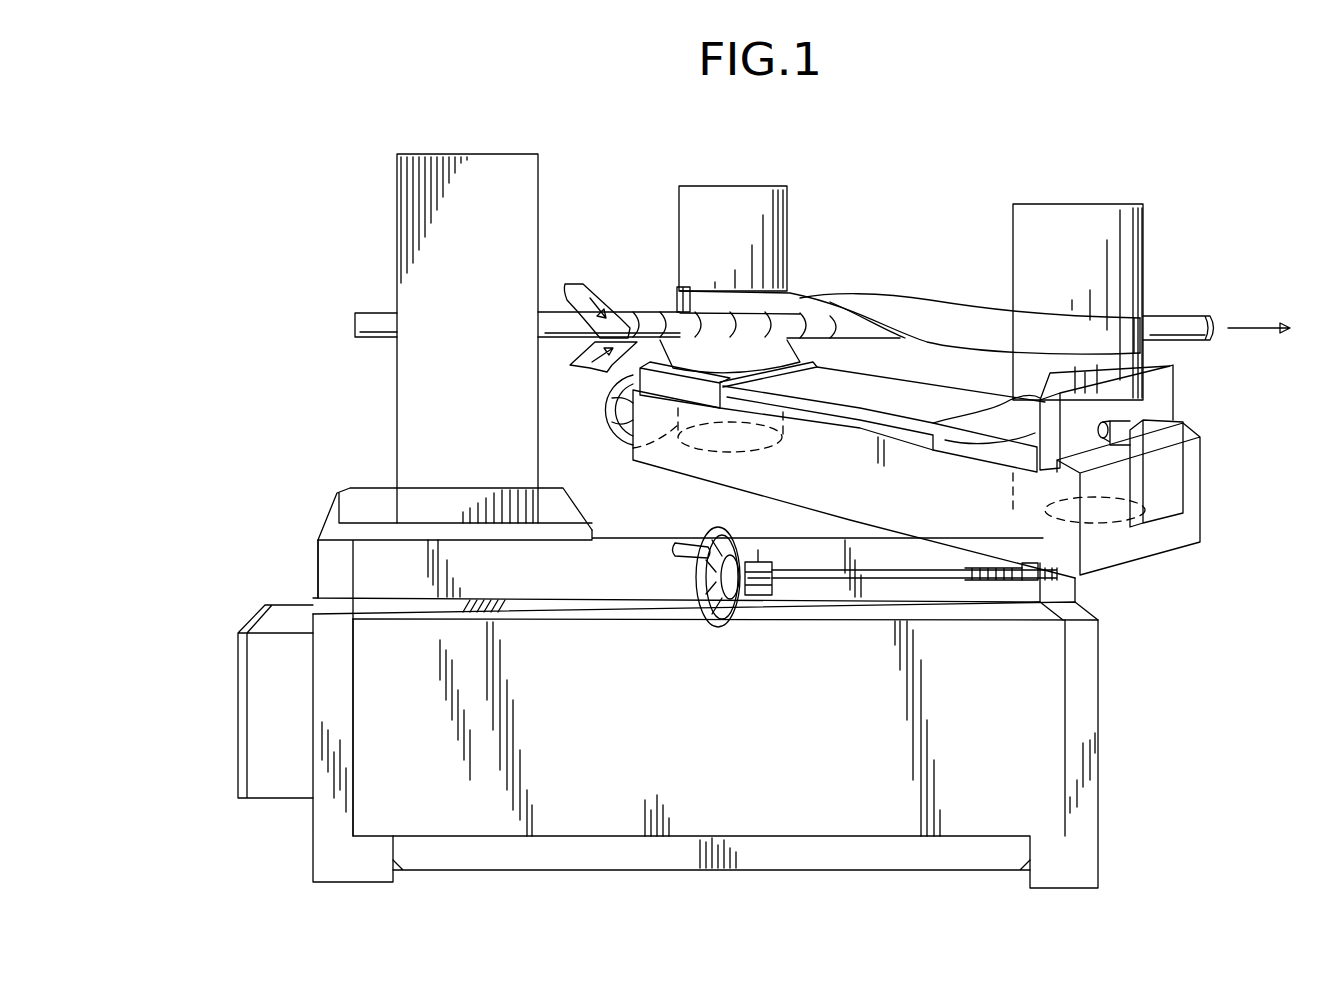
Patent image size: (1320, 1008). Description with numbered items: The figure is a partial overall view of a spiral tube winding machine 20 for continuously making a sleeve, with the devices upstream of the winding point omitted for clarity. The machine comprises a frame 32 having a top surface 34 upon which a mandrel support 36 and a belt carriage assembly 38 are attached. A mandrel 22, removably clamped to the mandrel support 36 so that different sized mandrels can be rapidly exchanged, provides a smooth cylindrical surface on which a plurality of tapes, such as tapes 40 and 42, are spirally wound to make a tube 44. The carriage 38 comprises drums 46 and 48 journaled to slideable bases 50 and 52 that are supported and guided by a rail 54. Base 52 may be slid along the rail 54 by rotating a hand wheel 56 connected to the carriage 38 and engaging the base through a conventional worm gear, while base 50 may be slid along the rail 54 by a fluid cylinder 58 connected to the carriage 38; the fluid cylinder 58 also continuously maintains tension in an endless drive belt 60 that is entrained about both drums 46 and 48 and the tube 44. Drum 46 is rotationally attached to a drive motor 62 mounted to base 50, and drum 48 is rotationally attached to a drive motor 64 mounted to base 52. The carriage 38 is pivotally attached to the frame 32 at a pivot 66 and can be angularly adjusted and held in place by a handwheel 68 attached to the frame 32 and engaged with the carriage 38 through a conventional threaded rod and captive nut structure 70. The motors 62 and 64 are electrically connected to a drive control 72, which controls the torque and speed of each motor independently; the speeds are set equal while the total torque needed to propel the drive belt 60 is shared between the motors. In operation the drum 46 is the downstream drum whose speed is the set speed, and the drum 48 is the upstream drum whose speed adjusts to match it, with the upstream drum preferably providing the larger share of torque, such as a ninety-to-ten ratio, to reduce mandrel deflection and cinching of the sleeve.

The spiral tube winding machine 20 is at (313, 286).
The mandrel 22 is at (540, 345).
The frame 32 is at (1100, 838).
The top surface 34 is at (655, 522).
The mandrel support 36 is at (397, 190).
The belt carriage assembly 38 is at (1113, 572).
The tape 40 is at (600, 370).
The tape 42 is at (575, 284).
The tube 44 is at (667, 335).
The drum 46 is at (1120, 206).
The drum 48 is at (757, 186).
The slideable base 50 is at (975, 445).
The slideable base 52 is at (644, 370).
The rail 54 is at (852, 388).
The hand wheel 56 is at (606, 420).
The fluid cylinder 58 is at (1150, 425).
The endless drive belt 60 is at (950, 300).
The drive motor 62 is at (1118, 535).
The drive motor 64 is at (633, 448).
The pivot 66 is at (830, 535).
The handwheel 68 is at (695, 580).
The threaded rod and captive nut structure 70 is at (957, 587).
The drive control 72 is at (238, 698).